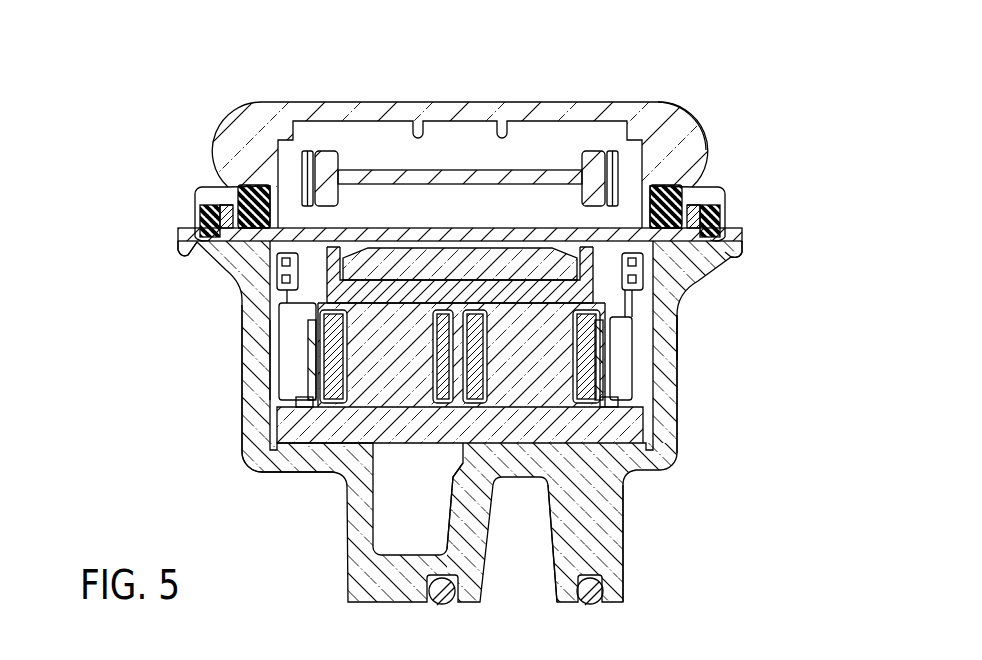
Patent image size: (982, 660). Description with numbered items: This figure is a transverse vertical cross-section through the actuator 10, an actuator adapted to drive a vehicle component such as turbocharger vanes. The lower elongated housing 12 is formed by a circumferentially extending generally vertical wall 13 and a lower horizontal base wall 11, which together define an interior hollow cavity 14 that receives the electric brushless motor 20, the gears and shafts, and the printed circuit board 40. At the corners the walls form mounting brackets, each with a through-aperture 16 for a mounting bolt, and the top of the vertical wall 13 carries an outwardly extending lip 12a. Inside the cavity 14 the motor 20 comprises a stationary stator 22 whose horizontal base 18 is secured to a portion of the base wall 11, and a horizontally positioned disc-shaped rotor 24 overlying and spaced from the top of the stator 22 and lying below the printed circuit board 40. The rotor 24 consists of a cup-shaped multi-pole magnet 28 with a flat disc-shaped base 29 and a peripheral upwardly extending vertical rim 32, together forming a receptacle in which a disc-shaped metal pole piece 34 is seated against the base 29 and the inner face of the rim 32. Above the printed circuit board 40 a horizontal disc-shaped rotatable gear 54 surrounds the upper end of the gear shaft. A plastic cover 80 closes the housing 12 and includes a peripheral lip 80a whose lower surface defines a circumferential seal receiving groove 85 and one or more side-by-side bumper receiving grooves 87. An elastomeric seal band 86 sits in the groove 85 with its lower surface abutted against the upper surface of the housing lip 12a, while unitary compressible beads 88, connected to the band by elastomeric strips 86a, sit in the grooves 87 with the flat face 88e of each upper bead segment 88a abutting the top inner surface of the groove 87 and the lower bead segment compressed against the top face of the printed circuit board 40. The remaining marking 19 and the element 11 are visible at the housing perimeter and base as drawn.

The actuator 10 is at (795, 312).
The base wall 11 is at (288, 467).
The housing 12 is at (238, 395).
The lip 12a is at (330, 250).
The vertical wall 13 is at (667, 325).
The interior cavity 14 is at (273, 315).
The through-aperture 16 is at (596, 150).
The horizontal base 18 is at (623, 427).
The cap rim 19 is at (678, 100).
The motor 20 is at (622, 367).
The stator 22 is at (537, 367).
The rotor 24 is at (700, 242).
The magnet 28 is at (275, 343).
The base 29 is at (308, 453).
The rim 32 is at (322, 268).
The pole piece 34 is at (478, 262).
The printed circuit board 40 is at (626, 214).
The gear 54 is at (438, 174).
The cover 80 is at (346, 98).
The lip 80a is at (200, 193).
The seal receiving groove 85 is at (197, 213).
The seal band 86 is at (195, 218).
The elastomeric strips 86a is at (196, 238).
The bumper receiving groove 87 is at (213, 197).
The beads 88 is at (213, 195).
The upper bead segment 88a is at (257, 183).
The flat face 88e is at (247, 185).